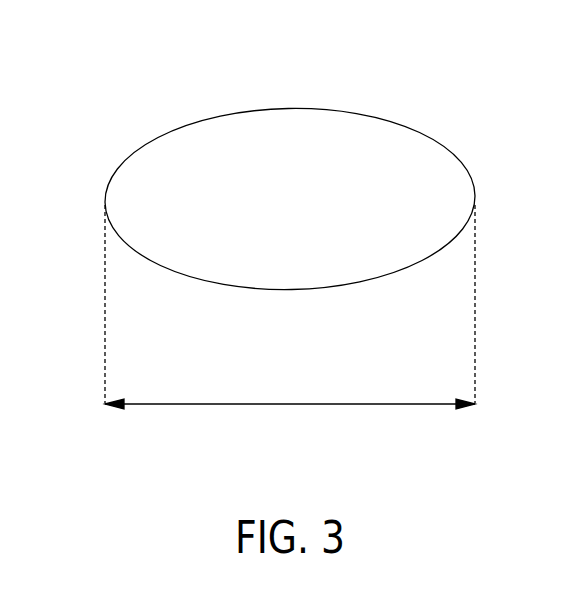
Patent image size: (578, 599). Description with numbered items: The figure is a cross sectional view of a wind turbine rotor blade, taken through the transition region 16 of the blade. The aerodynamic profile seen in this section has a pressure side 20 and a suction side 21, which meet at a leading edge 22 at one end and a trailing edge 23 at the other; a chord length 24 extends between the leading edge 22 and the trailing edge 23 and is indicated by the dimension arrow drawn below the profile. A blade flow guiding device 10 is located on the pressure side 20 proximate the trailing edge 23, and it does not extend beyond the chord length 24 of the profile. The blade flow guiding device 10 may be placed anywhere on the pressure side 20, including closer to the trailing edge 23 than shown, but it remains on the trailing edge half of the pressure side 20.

The blade flow guiding device 10 is at (460, 236).
The transition region 16 is at (260, 160).
The pressure side 20 is at (270, 287).
The suction side 21 is at (340, 108).
The leading edge 22 is at (104, 200).
The trailing edge 23 is at (476, 200).
The chord length 24 is at (367, 404).